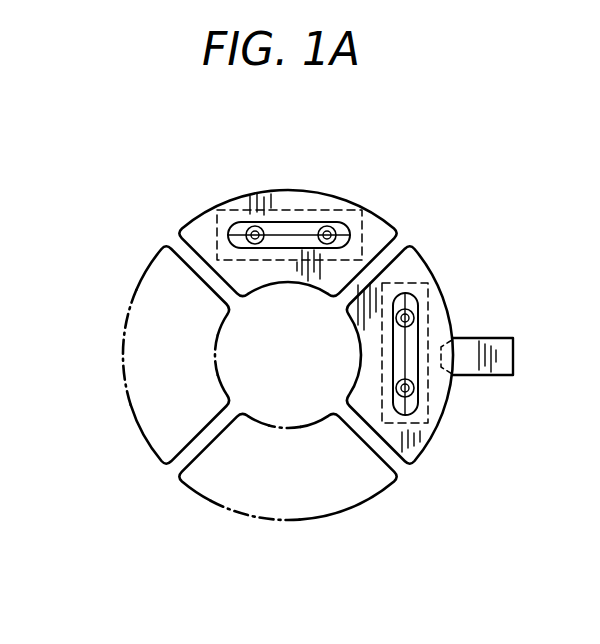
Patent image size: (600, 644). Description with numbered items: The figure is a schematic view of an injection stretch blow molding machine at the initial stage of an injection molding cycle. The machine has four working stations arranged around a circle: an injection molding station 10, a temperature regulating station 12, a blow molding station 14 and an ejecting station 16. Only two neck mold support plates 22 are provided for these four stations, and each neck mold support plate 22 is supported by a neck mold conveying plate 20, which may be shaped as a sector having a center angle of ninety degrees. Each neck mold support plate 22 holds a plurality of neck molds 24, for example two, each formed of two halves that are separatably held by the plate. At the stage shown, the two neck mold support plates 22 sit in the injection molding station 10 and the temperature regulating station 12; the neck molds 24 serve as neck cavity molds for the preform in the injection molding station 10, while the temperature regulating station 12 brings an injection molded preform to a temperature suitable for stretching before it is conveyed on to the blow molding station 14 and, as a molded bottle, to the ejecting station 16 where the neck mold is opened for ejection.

The injection molding station 10 is at (452, 303).
The temperature regulating station 12 is at (318, 190).
The blow molding station 14 is at (130, 412).
The ejecting station 16 is at (296, 527).
The neck mold conveying plate 20 is at (428, 444).
The neck mold support plate 22 is at (430, 400).
The neck mold 24 is at (334, 228).